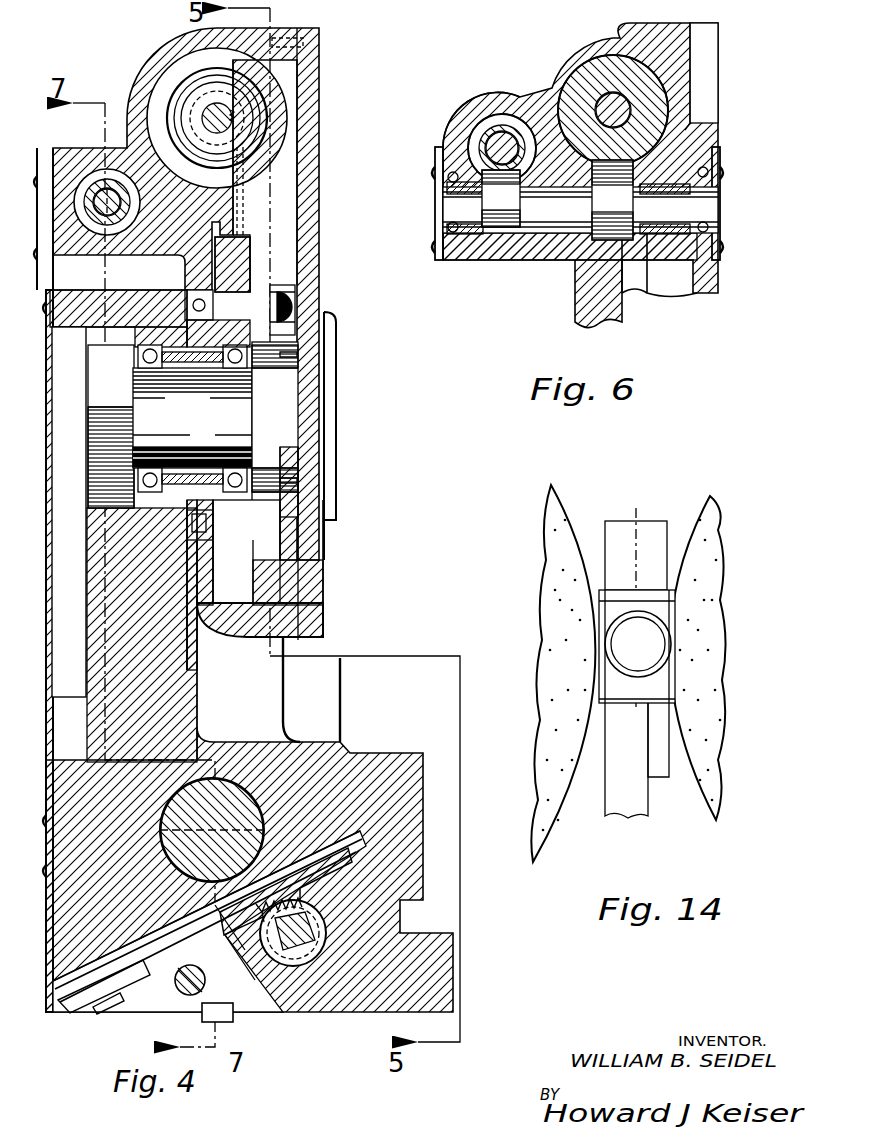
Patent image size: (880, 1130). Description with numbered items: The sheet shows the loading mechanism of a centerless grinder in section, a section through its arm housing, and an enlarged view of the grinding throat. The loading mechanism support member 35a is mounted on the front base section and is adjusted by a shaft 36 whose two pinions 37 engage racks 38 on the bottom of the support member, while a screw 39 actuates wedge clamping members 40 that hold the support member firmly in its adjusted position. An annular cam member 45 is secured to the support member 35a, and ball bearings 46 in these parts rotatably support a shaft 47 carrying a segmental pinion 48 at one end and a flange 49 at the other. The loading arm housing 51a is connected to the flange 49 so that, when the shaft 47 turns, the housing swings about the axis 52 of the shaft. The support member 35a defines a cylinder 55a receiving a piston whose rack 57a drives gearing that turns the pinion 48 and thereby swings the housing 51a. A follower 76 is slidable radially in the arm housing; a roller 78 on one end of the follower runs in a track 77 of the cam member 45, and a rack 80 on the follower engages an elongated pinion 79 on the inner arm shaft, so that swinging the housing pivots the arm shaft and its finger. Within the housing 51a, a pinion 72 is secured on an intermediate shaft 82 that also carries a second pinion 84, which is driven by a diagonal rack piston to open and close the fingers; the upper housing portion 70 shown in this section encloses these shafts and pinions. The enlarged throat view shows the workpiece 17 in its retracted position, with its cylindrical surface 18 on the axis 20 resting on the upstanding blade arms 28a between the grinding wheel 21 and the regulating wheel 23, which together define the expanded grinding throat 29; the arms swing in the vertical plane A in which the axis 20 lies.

In FIG. 4, the elongated pinion 79 is at (190, 170).
In FIG. 4, the rack 80 is at (245, 147).
In FIG. 4, the follower 76 is at (265, 160).
In FIG. 4, the roller 78 is at (217, 278).
In FIG. 4, the track 77 is at (216, 412).
In FIG. 4, the shaft 47 is at (192, 418).
In FIG. 4, the segmental pinion 48 is at (135, 418).
In FIG. 4, the flange 49 is at (250, 418).
In FIG. 4, the ball bearings 46 is at (212, 452).
In FIG. 4, the axis 52 is at (260, 415).
In FIG. 4, the annular cam member 45 is at (247, 522).
In FIG. 4, the housing 51a is at (323, 620).
In FIG. 6, the housing 51a is at (503, 96).
In FIG. 4, the rack 57a is at (262, 733).
In FIG. 4, the loading mechanism support member 35a is at (340, 799).
In FIG. 4, the cylinder 55a is at (263, 818).
In FIG. 4, the racks 38 is at (320, 900).
In FIG. 4, the shaft 36 is at (322, 935).
In FIG. 4, the pinions 37 is at (283, 957).
In FIG. 4, the wedge clamping members 40 is at (156, 959).
In FIG. 4, the screw 39 is at (180, 994).
In FIG. 6, the gear housing 70 is at (600, 58).
In FIG. 6, the intermediate shaft 82 is at (575, 198).
In FIG. 6, the pinion 72 is at (688, 198).
In FIG. 6, the second pinion 84 is at (510, 260).
In FIG. 14, the grinding wheel 21 is at (566, 490).
In FIG. 14, the regulating wheel 23 is at (718, 542).
In FIG. 14, the grinding throat 29 is at (672, 560).
In FIG. 14, the workpiece 17 is at (623, 521).
In FIG. 14, the vertical plane A is at (658, 508).
In FIG. 14, the cylindrical surface of revolution 18 is at (662, 622).
In FIG. 14, the axis 20 is at (638, 644).
In FIG. 14, the upstanding arms 28a is at (656, 816).